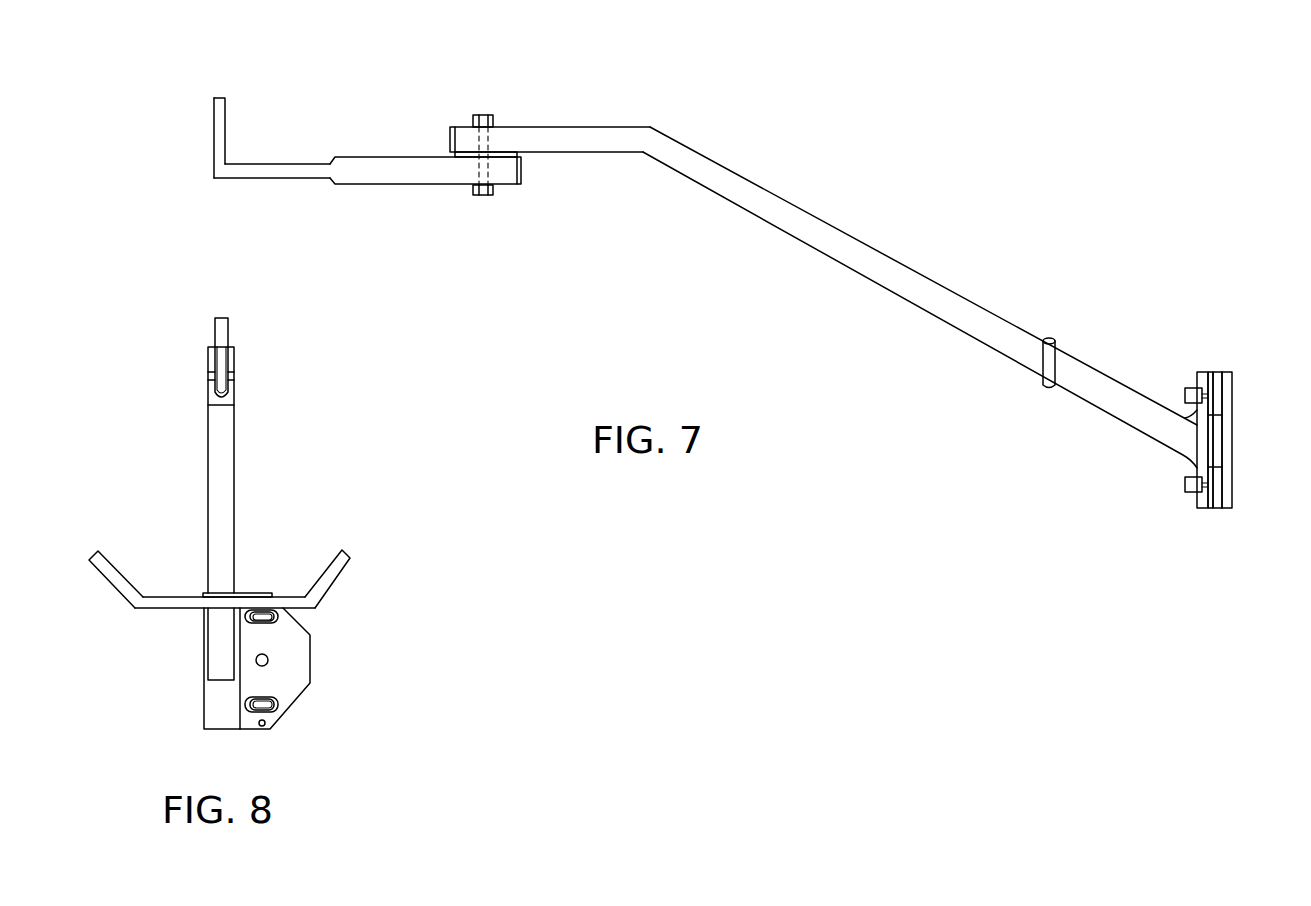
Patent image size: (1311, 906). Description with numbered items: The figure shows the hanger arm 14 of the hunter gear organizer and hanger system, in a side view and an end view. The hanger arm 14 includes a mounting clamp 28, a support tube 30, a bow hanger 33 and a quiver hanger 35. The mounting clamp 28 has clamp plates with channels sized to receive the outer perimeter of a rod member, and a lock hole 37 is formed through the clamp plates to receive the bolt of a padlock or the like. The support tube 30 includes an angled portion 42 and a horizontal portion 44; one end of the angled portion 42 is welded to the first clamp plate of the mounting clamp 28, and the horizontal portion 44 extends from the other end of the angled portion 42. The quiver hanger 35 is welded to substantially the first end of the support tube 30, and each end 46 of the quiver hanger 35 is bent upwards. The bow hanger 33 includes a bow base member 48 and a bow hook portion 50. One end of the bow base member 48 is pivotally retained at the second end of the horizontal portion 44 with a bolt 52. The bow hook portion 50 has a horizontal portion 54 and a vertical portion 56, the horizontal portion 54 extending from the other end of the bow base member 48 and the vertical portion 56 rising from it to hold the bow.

In FIG. 7, the hanger arm 14 is at (776, 170).
In FIG. 8, the hanger arm 14 is at (188, 378).
In FIG. 7, the mounting clamp 28 is at (1217, 370).
In FIG. 8, the mounting clamp 28 is at (303, 702).
In FIG. 8, the support tube 30 is at (297, 653).
In FIG. 7, the bow hanger 33 is at (388, 184).
In FIG. 7, the quiver hanger 35 is at (1047, 365).
In FIG. 8, the quiver hanger 35 is at (328, 588).
In FIG. 8, the lock hole 37 is at (268, 663).
In FIG. 7, the angled portion 42 is at (910, 302).
In FIG. 7, the horizontal portion 44 is at (605, 125).
In FIG. 8, the end 46 is at (123, 572).
In FIG. 7, the bow base member 48 is at (357, 157).
In FIG. 7, the bow hook portion 50 is at (207, 128).
In FIG. 7, the bolt 52 is at (495, 115).
In FIG. 7, the horizontal portion 54 is at (255, 178).
In FIG. 7, the vertical portion 56 is at (227, 118).